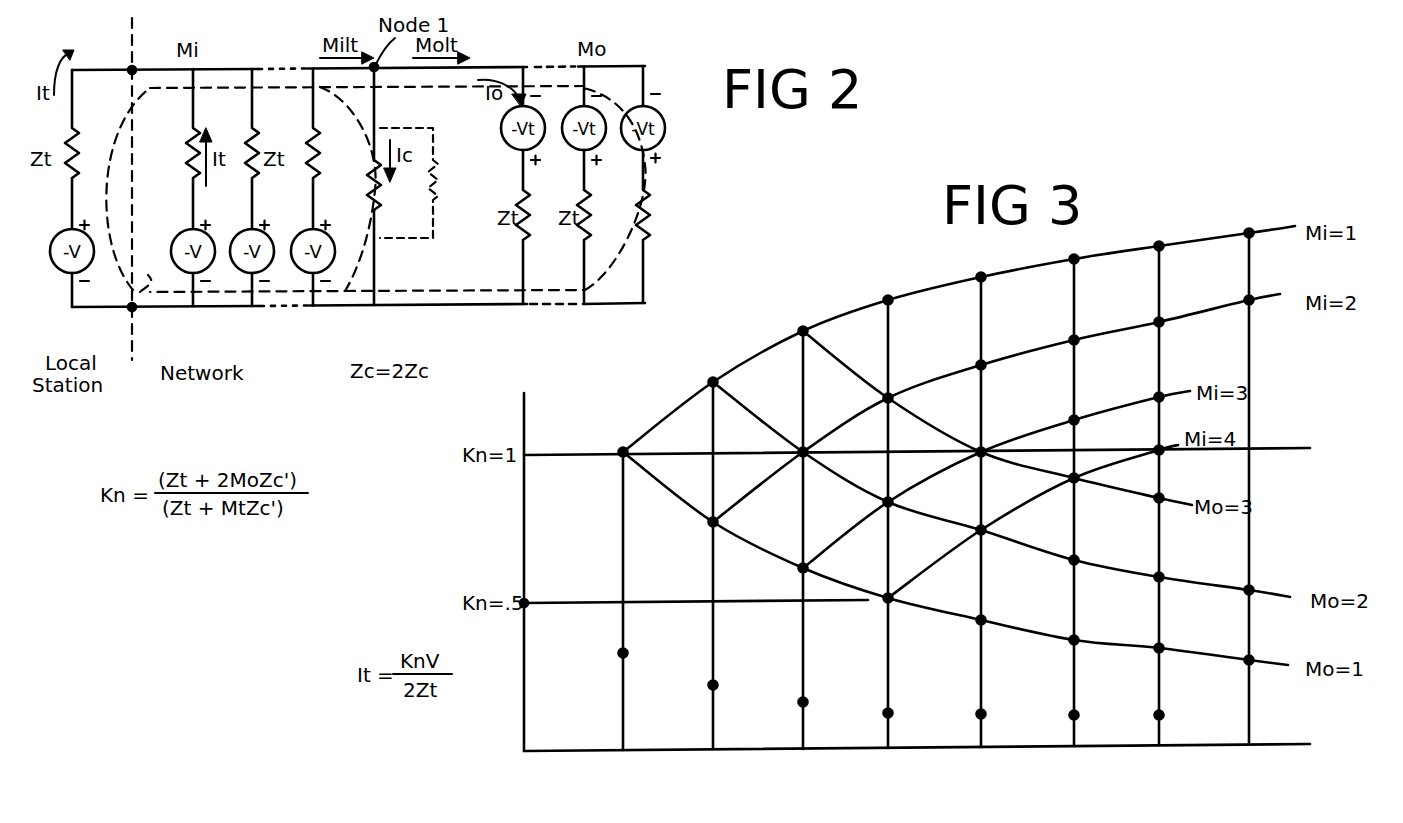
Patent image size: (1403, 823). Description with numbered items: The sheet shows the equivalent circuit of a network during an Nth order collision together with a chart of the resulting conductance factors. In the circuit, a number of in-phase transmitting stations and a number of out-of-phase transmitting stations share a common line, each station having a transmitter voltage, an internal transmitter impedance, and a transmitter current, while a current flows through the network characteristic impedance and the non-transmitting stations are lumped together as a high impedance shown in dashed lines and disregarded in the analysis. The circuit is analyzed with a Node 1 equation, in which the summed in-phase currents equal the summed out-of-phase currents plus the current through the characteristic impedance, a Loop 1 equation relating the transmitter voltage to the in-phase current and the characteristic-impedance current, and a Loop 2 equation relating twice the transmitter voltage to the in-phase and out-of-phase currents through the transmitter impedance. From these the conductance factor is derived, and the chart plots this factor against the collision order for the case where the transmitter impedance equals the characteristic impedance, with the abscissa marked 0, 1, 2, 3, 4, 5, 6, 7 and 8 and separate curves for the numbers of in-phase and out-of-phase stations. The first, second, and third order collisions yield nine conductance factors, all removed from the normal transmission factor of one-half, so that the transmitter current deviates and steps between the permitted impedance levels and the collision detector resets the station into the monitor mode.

In FIG. 3, the graph abscissa origin 0 is at (526, 595).
In FIG. 2, the Node 1 is at (148, 297).
In FIG. 3, the Node 1 is at (620, 623).
In FIG. 2, the Loop 2 is at (575, 292).
In FIG. 3, the Loop 2 is at (709, 588).
In FIG. 3, the abscissa value 3 is at (799, 563).
In FIG. 3, the abscissa value 4 is at (888, 547).
In FIG. 3, the abscissa value 5 is at (979, 536).
In FIG. 3, the abscissa value 6 is at (1072, 527).
In FIG. 3, the abscissa value 7 is at (1159, 520).
In FIG. 3, the abscissa value 8 is at (1249, 514).